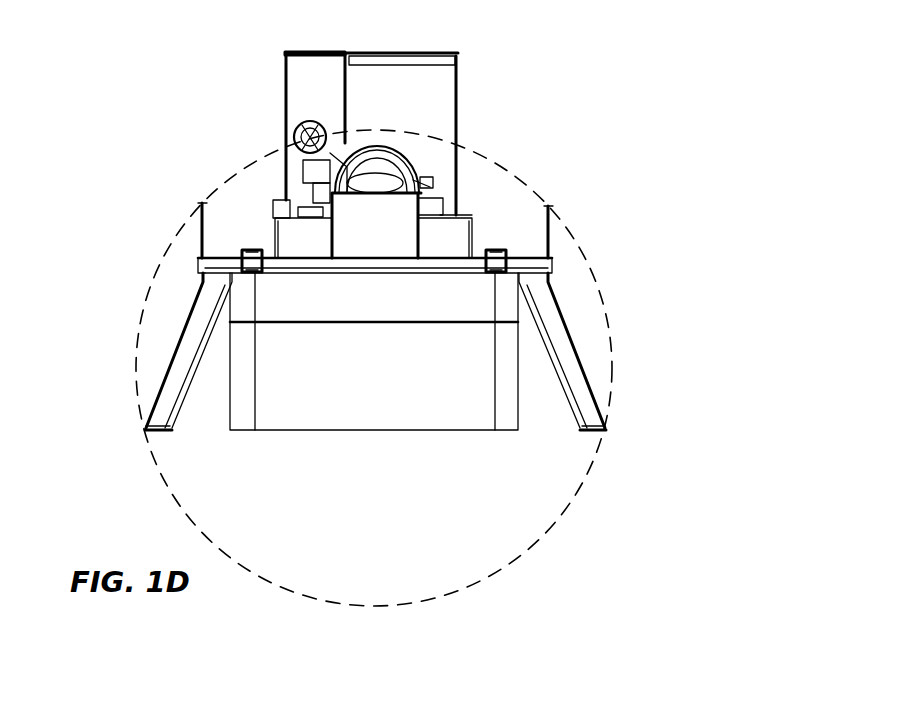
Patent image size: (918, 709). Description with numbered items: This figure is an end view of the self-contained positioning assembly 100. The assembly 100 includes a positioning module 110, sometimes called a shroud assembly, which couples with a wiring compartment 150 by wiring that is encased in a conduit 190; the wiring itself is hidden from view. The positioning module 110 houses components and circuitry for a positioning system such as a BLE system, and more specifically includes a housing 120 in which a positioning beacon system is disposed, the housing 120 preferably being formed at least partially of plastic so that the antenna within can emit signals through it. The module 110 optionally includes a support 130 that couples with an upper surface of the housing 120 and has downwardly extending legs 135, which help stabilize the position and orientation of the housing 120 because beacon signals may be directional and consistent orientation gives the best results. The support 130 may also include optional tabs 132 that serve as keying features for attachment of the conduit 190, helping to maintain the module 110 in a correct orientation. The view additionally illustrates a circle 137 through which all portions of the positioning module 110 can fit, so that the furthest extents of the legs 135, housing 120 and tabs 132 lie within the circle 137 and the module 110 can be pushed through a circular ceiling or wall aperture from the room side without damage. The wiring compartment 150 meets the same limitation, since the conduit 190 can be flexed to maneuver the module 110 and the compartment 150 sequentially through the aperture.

The self-contained positioning assembly 100 is at (185, 70).
The positioning module 110 is at (583, 282).
The housing 120 is at (372, 398).
The support 130 is at (525, 256).
The tabs 132 is at (618, 235).
The legs 135 is at (165, 384).
The circle 137 is at (563, 513).
The wiring compartment 150 is at (458, 85).
The conduit 190 is at (373, 172).